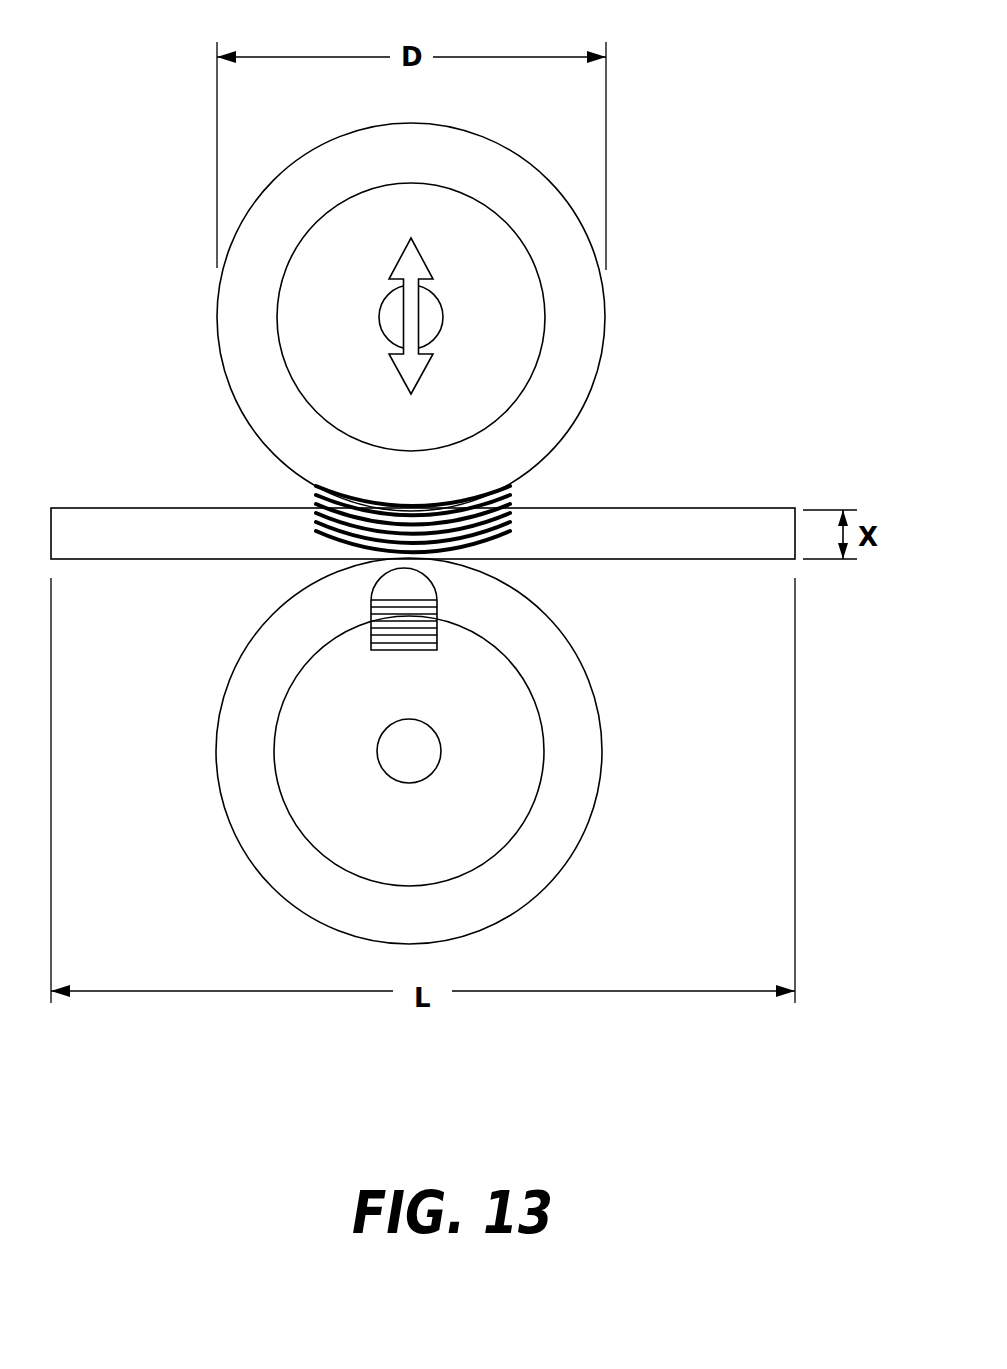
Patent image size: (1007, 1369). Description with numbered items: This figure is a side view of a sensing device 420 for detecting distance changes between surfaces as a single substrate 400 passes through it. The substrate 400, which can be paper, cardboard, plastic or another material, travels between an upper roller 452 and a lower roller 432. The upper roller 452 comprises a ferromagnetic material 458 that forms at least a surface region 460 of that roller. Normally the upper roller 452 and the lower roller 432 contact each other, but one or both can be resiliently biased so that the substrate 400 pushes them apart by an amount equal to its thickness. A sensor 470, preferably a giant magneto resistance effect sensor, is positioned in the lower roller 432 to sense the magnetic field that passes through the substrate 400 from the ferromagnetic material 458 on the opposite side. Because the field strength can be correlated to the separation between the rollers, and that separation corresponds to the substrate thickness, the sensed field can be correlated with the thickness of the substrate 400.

The substrate 400 is at (738, 508).
The device 420 is at (664, 70).
The lower roller 432 is at (603, 750).
The upper roller 452 is at (470, 299).
The ferromagnetic material 458 is at (505, 158).
The surface region 460 is at (305, 157).
The sensor 470 is at (370, 648).